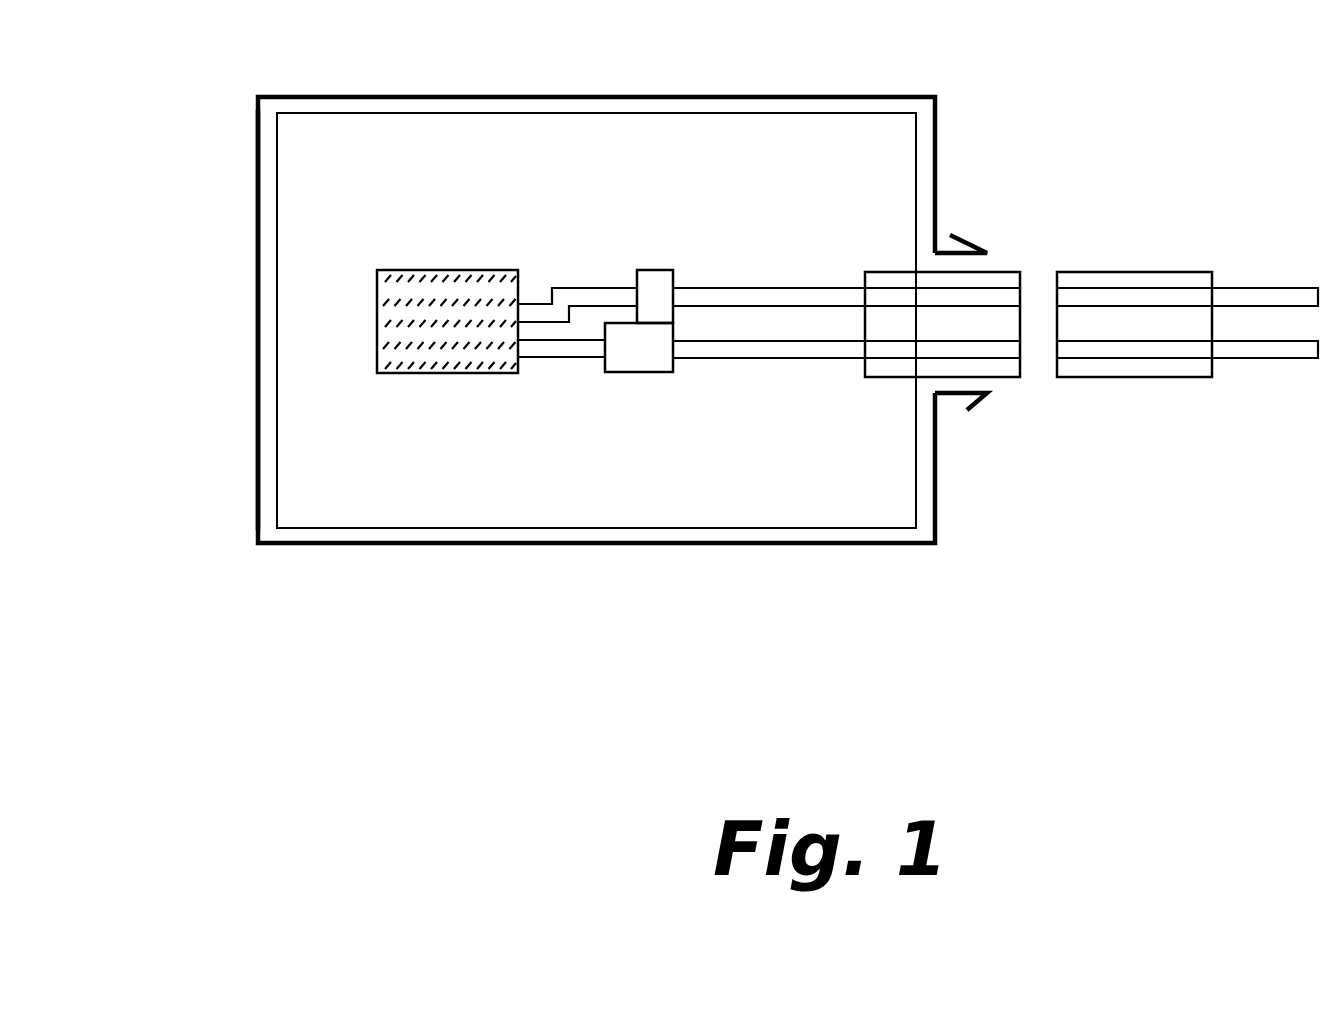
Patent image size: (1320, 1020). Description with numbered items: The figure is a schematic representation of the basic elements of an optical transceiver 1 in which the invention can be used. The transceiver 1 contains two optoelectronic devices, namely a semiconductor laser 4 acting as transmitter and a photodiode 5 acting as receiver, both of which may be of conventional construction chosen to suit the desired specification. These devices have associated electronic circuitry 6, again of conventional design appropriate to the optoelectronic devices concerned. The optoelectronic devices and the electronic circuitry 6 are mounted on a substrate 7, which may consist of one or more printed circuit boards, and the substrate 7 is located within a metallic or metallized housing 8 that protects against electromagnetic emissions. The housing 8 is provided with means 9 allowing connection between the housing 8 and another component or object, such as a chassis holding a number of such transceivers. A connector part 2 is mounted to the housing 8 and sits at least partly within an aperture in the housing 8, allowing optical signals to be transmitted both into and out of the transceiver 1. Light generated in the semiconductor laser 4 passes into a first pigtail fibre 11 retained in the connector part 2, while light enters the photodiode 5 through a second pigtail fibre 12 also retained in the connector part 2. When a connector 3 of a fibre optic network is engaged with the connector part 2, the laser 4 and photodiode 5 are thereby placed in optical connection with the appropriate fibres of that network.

The optical transceiver 1 is at (960, 117).
The connector part 2 is at (882, 383).
The connector 3 is at (1122, 392).
The semiconductor laser 4 is at (625, 382).
The photodiode 5 is at (638, 258).
The electronic circuitry 6 is at (412, 382).
The substrate 7 is at (328, 190).
The housing 8 is at (248, 348).
The connection means 9 is at (983, 235).
The first pigtail fibre 11 is at (762, 367).
The second pigtail fibre 12 is at (738, 278).